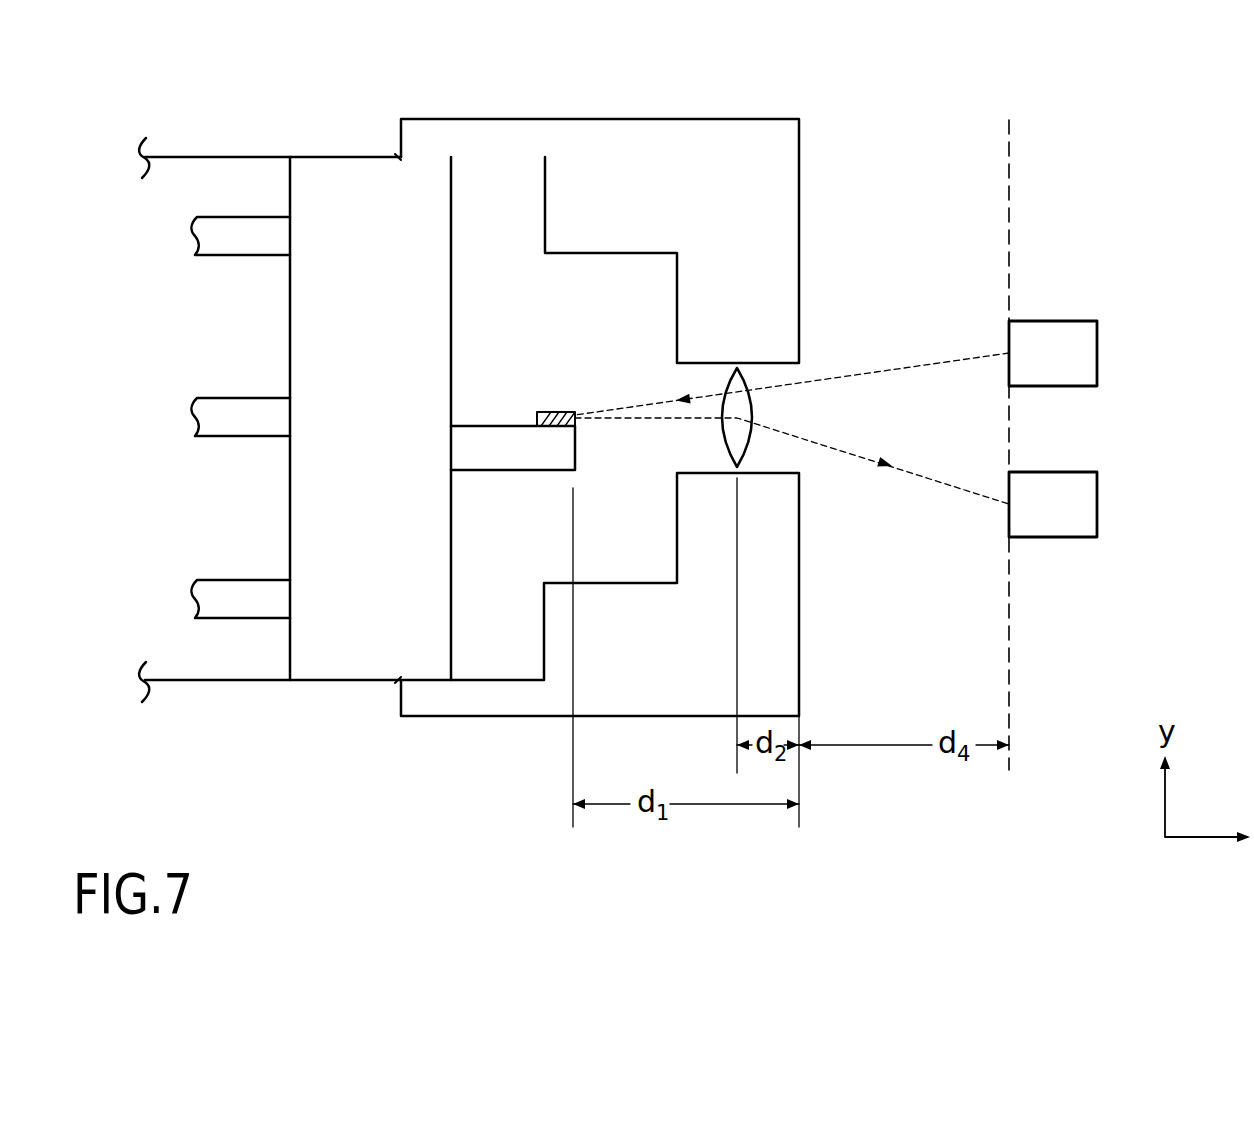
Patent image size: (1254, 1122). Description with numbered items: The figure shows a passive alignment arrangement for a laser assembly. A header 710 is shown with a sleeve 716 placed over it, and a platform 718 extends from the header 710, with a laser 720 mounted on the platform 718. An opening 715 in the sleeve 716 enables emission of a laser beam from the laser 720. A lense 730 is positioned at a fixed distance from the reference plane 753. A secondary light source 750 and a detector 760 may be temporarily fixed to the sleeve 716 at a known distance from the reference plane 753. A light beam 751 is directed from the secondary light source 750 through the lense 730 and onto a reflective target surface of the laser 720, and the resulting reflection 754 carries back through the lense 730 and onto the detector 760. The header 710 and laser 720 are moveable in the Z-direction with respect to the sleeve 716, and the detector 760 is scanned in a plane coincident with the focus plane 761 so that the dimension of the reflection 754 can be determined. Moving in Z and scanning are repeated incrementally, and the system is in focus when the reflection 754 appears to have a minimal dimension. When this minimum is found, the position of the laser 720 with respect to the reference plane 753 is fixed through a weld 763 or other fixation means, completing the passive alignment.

The header 710 is at (517, 445).
The opening 715 is at (648, 385).
The sleeve 716 is at (602, 173).
The platform 718 is at (503, 462).
The laser 720 is at (542, 410).
The lense 730 is at (727, 366).
The secondary light source 750 is at (1031, 372).
The light beam 751 is at (955, 354).
The reference plane 753 is at (805, 813).
The reflection 754 is at (643, 420).
The detector 760 is at (1031, 523).
The focus plane 761 is at (1019, 163).
The weld 763 is at (395, 157).